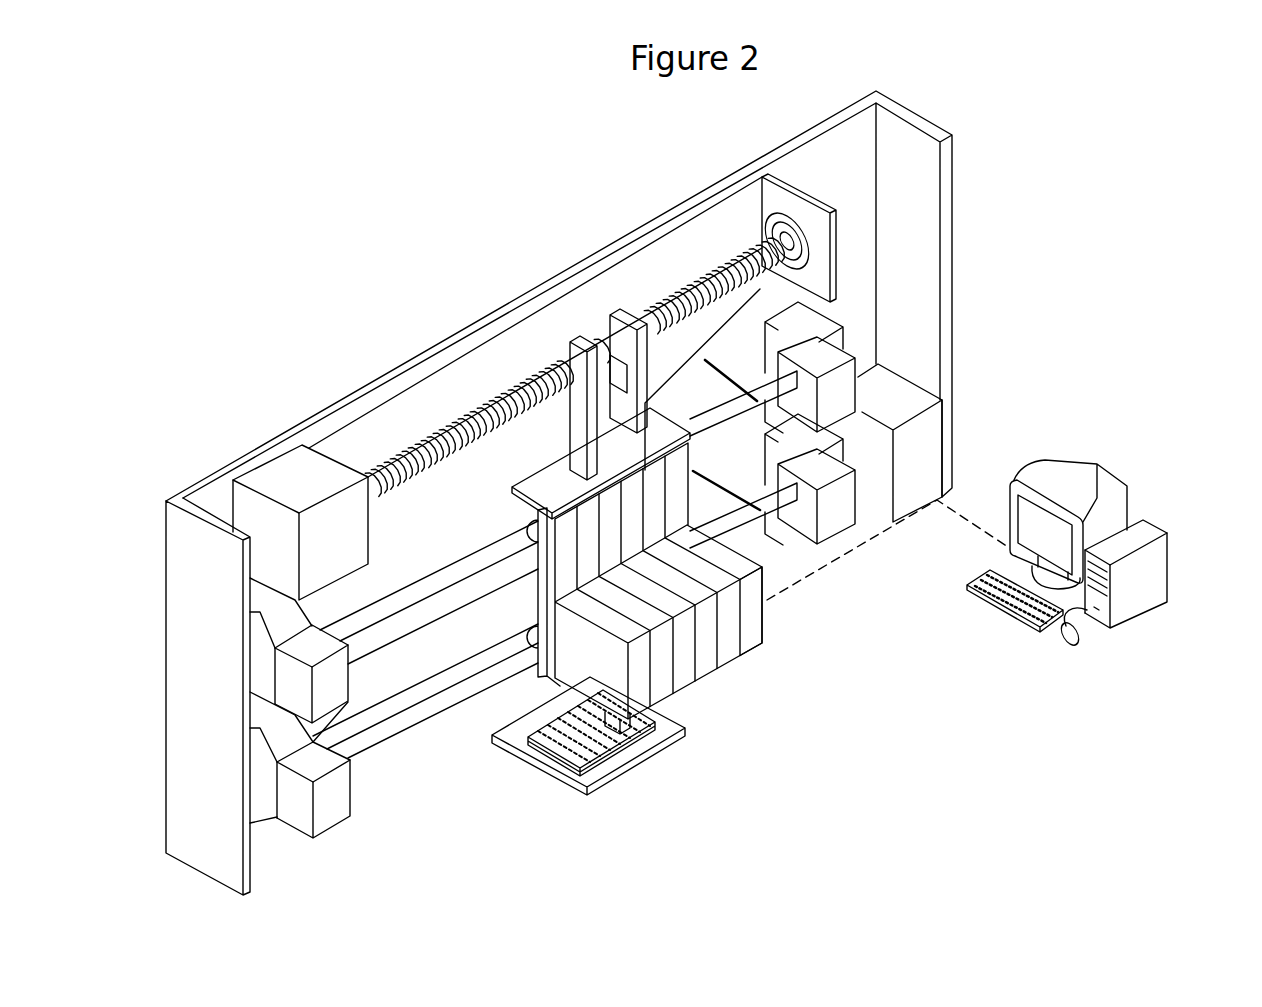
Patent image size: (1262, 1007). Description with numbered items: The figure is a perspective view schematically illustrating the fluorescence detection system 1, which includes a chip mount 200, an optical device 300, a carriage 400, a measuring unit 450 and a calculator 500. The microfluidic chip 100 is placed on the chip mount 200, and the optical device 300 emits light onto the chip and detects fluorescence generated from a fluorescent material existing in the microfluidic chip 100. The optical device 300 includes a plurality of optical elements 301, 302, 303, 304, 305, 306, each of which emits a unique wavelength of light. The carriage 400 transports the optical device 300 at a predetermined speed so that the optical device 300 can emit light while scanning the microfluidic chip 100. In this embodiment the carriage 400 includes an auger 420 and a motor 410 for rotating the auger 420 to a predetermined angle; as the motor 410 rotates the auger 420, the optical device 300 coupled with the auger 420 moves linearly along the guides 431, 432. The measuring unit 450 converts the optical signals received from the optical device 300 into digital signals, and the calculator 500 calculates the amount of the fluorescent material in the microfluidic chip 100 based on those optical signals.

The fluorescence detection system 1 is at (347, 254).
The microfluidic chip 100 is at (612, 752).
The chip mount 200 is at (523, 744).
The optical device 300 is at (767, 578).
The optical element 301 is at (638, 698).
The optical element 302 is at (663, 683).
The optical element 303 is at (688, 667).
The optical element 304 is at (712, 655).
The optical element 305 is at (730, 643).
The optical element 306 is at (757, 630).
The carriage 400 is at (205, 350).
The motor 410 is at (292, 467).
The auger 420 is at (432, 432).
The guide 431 is at (422, 603).
The guide 432 is at (387, 740).
The measuring unit 450 is at (928, 443).
The calculator 500 is at (1142, 458).